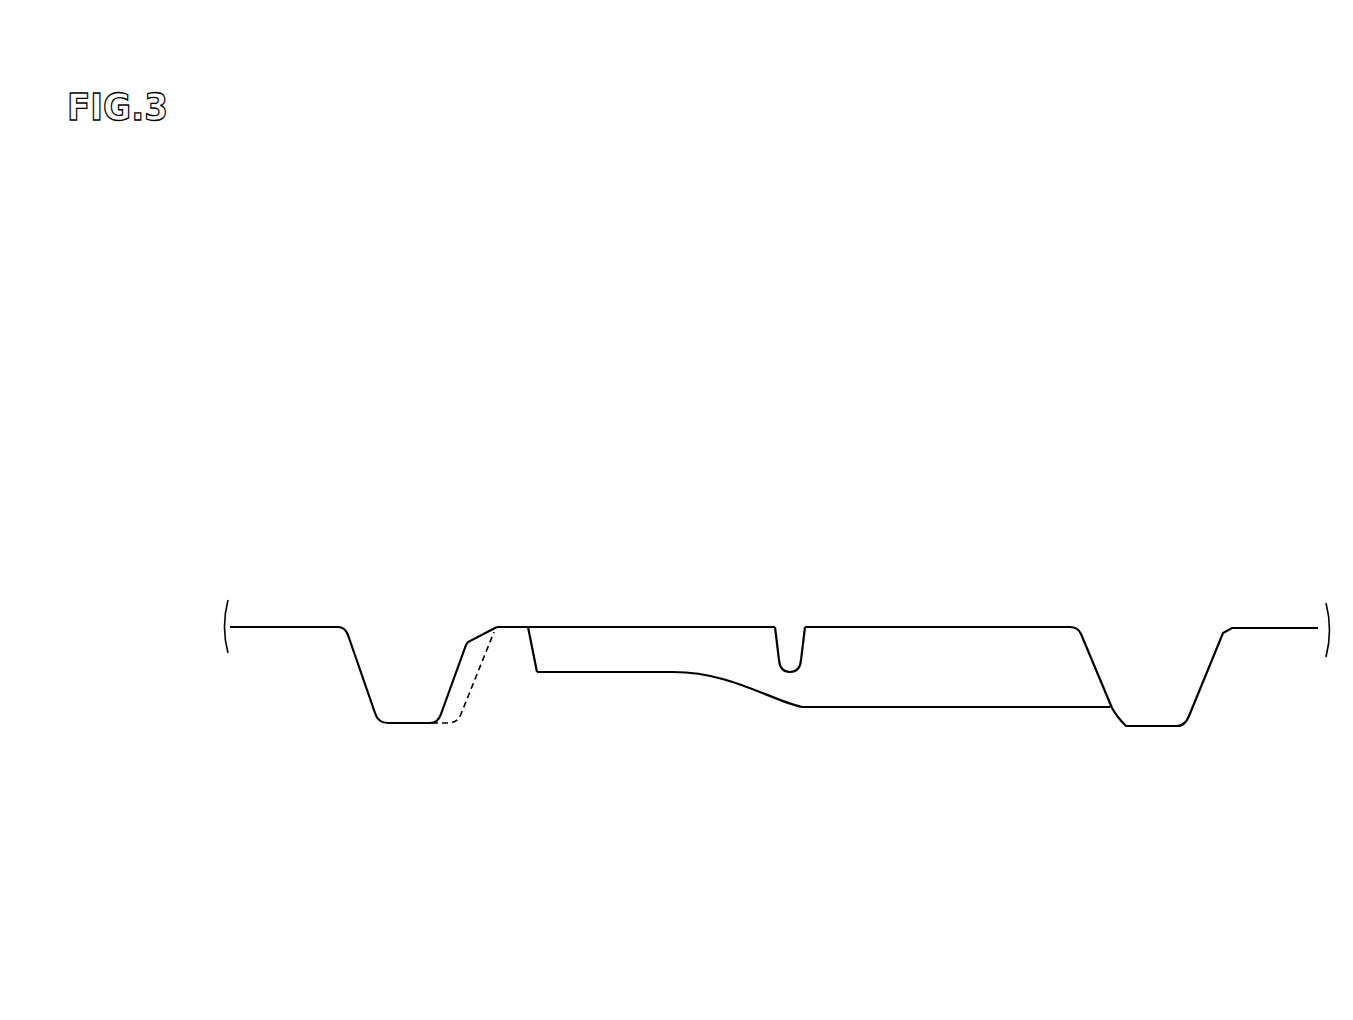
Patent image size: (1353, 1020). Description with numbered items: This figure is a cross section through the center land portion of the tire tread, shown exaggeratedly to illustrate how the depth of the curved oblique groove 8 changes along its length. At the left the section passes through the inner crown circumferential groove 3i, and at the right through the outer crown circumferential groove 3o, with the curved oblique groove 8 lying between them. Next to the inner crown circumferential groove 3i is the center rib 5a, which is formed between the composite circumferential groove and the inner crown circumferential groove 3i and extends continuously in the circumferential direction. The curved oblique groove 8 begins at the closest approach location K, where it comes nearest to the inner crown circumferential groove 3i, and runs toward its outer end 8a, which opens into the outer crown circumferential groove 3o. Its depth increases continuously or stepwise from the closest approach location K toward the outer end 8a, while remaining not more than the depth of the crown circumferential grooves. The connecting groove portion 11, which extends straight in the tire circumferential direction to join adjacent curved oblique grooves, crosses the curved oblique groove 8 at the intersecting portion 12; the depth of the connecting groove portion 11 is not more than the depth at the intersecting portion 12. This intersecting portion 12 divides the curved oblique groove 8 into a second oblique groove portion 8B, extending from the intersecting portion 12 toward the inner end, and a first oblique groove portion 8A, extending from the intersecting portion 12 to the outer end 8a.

The inner crown circumferential groove 3i is at (415, 612).
The outer crown circumferential groove 3o is at (1168, 613).
The center rib 5a is at (510, 642).
The closest approach location K is at (528, 610).
The curved oblique groove 8 is at (829, 512).
The first oblique groove portion 8A is at (956, 540).
The second oblique groove portion 8B is at (670, 612).
The outer end 8a is at (1093, 655).
The connecting groove portion 11 is at (790, 618).
The intersecting portion 12 is at (823, 603).